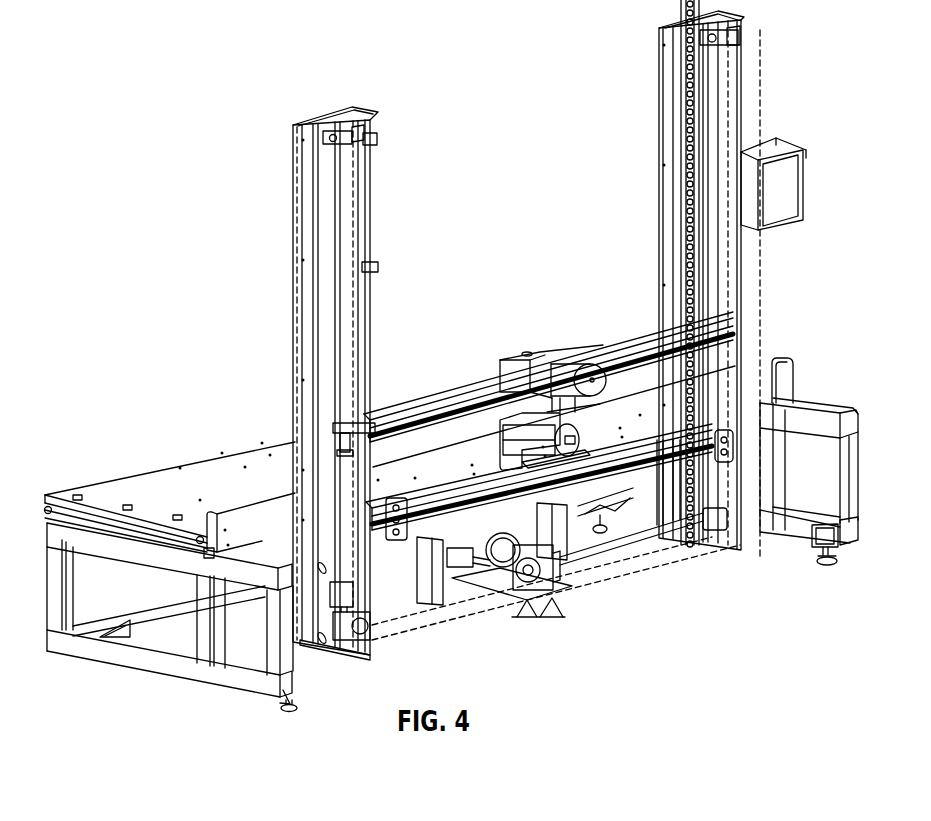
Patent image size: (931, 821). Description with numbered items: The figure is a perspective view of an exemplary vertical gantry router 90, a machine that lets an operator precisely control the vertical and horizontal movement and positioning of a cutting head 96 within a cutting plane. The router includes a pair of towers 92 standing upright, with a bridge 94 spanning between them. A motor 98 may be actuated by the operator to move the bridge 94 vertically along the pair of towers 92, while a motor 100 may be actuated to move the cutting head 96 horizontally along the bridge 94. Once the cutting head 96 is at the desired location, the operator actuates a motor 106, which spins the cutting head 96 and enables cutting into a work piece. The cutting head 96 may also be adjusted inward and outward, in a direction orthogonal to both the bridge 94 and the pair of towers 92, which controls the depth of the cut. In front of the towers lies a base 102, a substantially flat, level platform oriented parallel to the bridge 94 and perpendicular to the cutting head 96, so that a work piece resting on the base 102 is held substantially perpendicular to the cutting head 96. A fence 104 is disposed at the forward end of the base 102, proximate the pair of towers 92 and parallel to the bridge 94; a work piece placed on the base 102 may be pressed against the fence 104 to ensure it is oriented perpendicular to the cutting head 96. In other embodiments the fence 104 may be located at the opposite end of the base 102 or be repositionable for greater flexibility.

The vertical gantry router 90 is at (183, 44).
The pair of towers 92 is at (324, 114).
The bridge 94 is at (420, 408).
The cutting head 96 is at (496, 428).
The motor 98 is at (557, 582).
The motor 100 is at (530, 437).
The base 102 is at (118, 483).
The fence 104 is at (230, 515).
The motor 106 is at (573, 372).